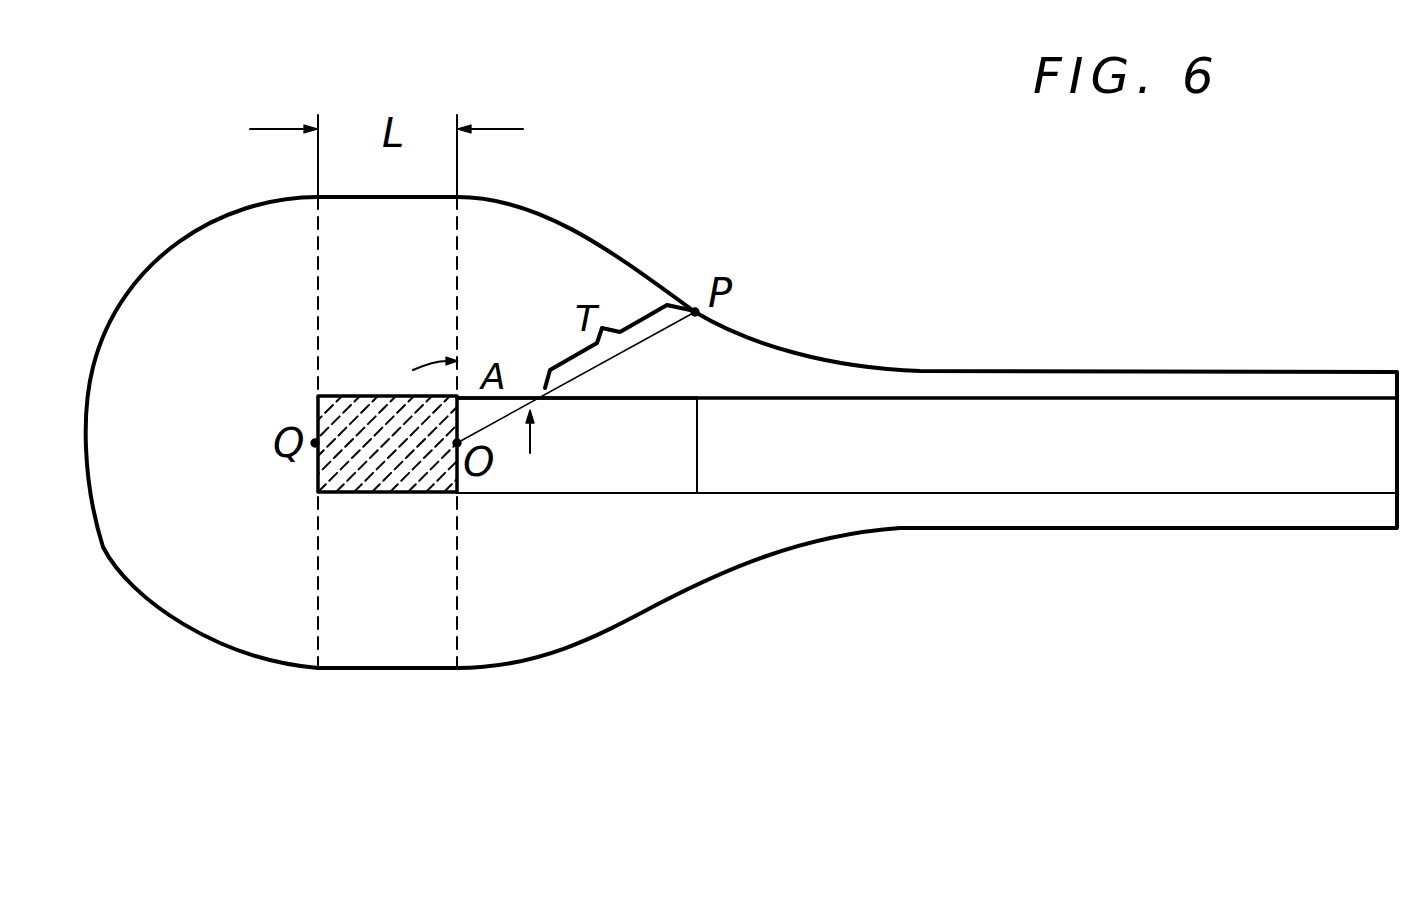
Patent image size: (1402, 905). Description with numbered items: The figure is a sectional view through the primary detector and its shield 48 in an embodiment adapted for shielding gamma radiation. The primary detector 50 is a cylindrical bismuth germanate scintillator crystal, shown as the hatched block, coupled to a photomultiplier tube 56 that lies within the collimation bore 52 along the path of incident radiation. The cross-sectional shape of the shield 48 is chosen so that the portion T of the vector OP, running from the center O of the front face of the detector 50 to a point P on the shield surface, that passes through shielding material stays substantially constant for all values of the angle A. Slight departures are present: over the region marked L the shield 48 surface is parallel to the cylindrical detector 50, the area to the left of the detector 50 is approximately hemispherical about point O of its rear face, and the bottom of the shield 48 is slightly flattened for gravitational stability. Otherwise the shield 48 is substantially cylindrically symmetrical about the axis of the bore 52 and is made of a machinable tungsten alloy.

The shield 48 is at (745, 530).
The primary detector 50 is at (392, 472).
The collimation bore 52 is at (968, 457).
The photomultiplier tube 56 is at (637, 470).